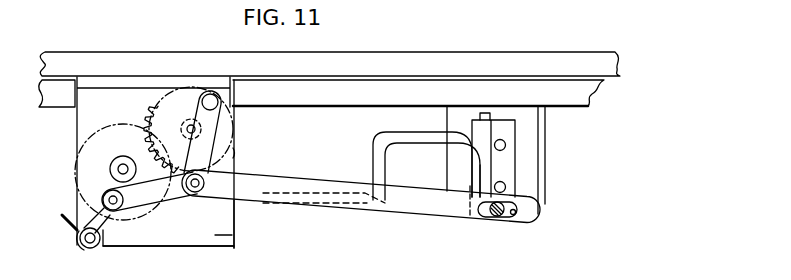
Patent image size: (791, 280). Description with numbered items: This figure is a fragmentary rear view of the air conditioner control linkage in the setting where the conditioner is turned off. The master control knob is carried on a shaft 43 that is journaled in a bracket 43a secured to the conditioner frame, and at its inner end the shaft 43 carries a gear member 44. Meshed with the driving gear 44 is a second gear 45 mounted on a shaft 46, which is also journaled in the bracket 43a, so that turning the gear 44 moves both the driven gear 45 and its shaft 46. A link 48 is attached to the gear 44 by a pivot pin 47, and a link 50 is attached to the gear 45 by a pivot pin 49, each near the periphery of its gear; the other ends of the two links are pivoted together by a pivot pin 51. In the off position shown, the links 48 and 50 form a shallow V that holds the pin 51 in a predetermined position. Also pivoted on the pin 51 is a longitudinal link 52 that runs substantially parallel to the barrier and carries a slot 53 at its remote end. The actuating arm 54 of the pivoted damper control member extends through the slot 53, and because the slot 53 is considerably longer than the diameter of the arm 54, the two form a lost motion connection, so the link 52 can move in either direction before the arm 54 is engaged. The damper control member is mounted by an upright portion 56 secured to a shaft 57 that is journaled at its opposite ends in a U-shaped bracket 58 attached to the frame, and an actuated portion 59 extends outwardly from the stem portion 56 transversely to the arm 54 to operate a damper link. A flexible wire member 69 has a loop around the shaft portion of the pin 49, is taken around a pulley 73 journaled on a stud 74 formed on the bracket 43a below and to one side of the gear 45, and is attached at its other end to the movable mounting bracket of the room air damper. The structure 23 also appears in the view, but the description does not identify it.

The frame member 23 is at (531, 61).
The shaft 43 is at (187, 127).
The bracket 43a is at (235, 244).
The gear member 44 is at (223, 129).
The second gear 45 is at (97, 164).
The shaft 46 is at (122, 156).
The pivot pin 47 is at (234, 99).
The link 48 is at (233, 153).
The pivot pin 49 is at (118, 212).
The link 50 is at (173, 197).
The pivot pin 51 is at (236, 208).
The longitudinal member or link 52 is at (443, 210).
The slot 53 is at (523, 213).
The actuating arm 54 is at (497, 216).
The upright portion 56 is at (483, 173).
The shaft 57 is at (482, 128).
The U-shaped bracket 58 is at (504, 133).
The actuated portion 59 is at (402, 138).
The flexible wire member 69 is at (67, 223).
The pulley 73 is at (80, 243).
The stud 74 is at (89, 246).